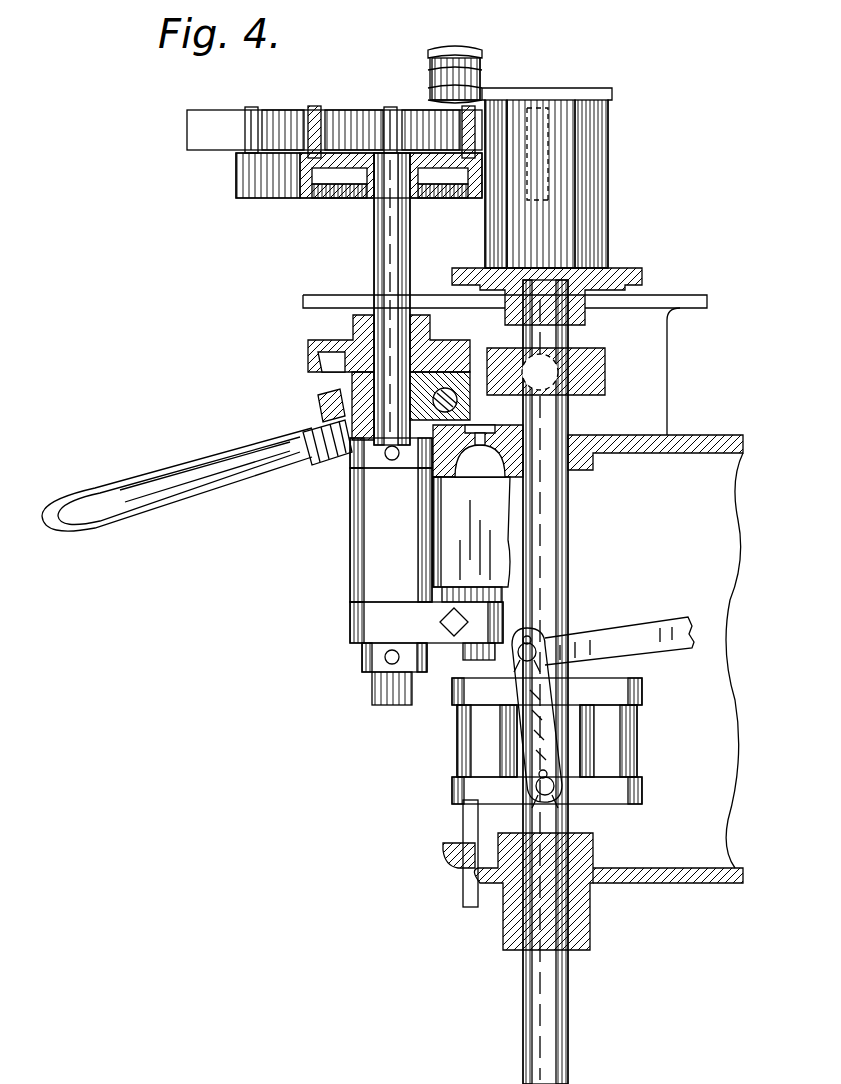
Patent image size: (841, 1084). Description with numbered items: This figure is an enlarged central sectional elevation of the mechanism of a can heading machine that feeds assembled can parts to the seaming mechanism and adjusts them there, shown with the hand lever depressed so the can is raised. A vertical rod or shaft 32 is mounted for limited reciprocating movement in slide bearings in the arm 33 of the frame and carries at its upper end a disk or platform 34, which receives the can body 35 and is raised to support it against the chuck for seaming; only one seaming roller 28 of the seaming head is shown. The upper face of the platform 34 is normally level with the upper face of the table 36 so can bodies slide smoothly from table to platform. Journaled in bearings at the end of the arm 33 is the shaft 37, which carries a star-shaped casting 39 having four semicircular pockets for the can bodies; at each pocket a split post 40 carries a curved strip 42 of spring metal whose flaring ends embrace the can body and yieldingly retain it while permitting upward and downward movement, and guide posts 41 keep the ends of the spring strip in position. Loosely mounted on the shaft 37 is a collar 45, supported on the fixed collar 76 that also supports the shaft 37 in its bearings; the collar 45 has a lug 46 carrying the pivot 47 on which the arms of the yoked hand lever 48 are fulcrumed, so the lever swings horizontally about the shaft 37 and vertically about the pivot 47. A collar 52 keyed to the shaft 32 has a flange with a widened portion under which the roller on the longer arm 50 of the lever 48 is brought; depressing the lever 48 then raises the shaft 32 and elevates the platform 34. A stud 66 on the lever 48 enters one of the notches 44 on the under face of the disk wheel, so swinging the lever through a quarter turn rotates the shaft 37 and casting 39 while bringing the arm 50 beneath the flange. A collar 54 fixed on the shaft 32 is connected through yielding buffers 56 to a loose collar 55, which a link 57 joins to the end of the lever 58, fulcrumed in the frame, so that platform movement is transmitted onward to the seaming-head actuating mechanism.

The seaming roller 28 is at (432, 60).
The vertical rod or shaft 32 is at (568, 553).
The arm 33 is at (710, 540).
The disk or platform 34 is at (620, 270).
The can body 35 is at (610, 176).
The table 36 is at (690, 297).
The shaft 37 is at (374, 234).
The star-shaped casting 39 is at (332, 195).
The split post 40 is at (316, 106).
The guide posts 41 is at (252, 107).
The curved strip of spring metal 42 is at (210, 132).
The notches or recesses 44 is at (445, 375).
The loose collar 45 is at (352, 381).
The lug or projection 46 is at (433, 440).
The pivot 47 is at (442, 393).
The yoked hand lever 48 is at (170, 466).
The longer arm 50 is at (490, 403).
The collar 52 is at (605, 372).
The collar 54 is at (645, 690).
The loose collar 55 is at (645, 797).
The yielding buffers 56 is at (460, 746).
The link 57 is at (535, 735).
The lever 58 is at (627, 630).
The stud 66 is at (320, 413).
The fixed collar 76 is at (352, 460).